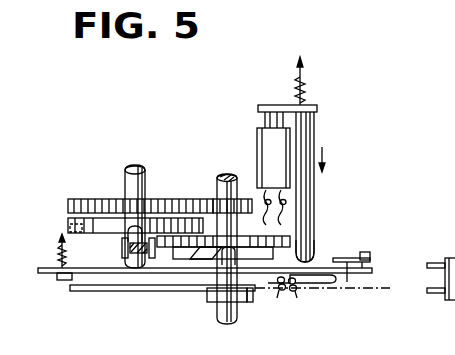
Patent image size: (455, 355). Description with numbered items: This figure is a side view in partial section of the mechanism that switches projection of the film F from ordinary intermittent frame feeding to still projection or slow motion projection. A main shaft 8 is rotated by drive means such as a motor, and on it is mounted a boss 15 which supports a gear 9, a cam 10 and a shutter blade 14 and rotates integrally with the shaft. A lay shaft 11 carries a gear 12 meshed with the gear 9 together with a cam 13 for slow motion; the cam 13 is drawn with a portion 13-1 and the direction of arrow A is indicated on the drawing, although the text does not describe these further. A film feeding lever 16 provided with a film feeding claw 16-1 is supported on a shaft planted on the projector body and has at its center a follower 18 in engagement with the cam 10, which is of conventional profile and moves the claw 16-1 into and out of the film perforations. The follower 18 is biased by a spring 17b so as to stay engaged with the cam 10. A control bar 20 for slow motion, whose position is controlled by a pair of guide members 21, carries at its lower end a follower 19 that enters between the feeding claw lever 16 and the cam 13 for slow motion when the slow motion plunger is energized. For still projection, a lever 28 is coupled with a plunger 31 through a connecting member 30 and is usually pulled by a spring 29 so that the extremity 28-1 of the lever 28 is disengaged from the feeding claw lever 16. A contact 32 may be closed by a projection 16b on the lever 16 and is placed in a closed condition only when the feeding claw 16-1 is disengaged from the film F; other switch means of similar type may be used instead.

The main shaft 8 is at (227, 173).
The gear 9 is at (223, 205).
The cam 10 is at (282, 237).
The lay shaft 11 is at (124, 182).
The gear 12 is at (80, 205).
The cam for slow motion 13 is at (93, 228).
The recess 13-1 is at (78, 234).
The shutter blade 14 is at (77, 292).
The boss 15 is at (220, 292).
The film feeding lever 16 is at (260, 273).
The projection 16b is at (294, 298).
The film feeding claw 16-1 is at (371, 255).
The spring 17b is at (58, 249).
The follower 18 is at (217, 253).
The follower 19 is at (140, 258).
The control bar for slow motion 20 is at (137, 230).
The guide members 21 is at (125, 259).
The lever for still projection 28 is at (302, 130).
The extremity 28-1 is at (314, 243).
The spring 29 is at (295, 80).
The connecting member 30 is at (310, 105).
The plunger for still projection 31 is at (267, 143).
The contact 32 is at (306, 284).
The direction A is at (331, 159).
The film F is at (347, 270).